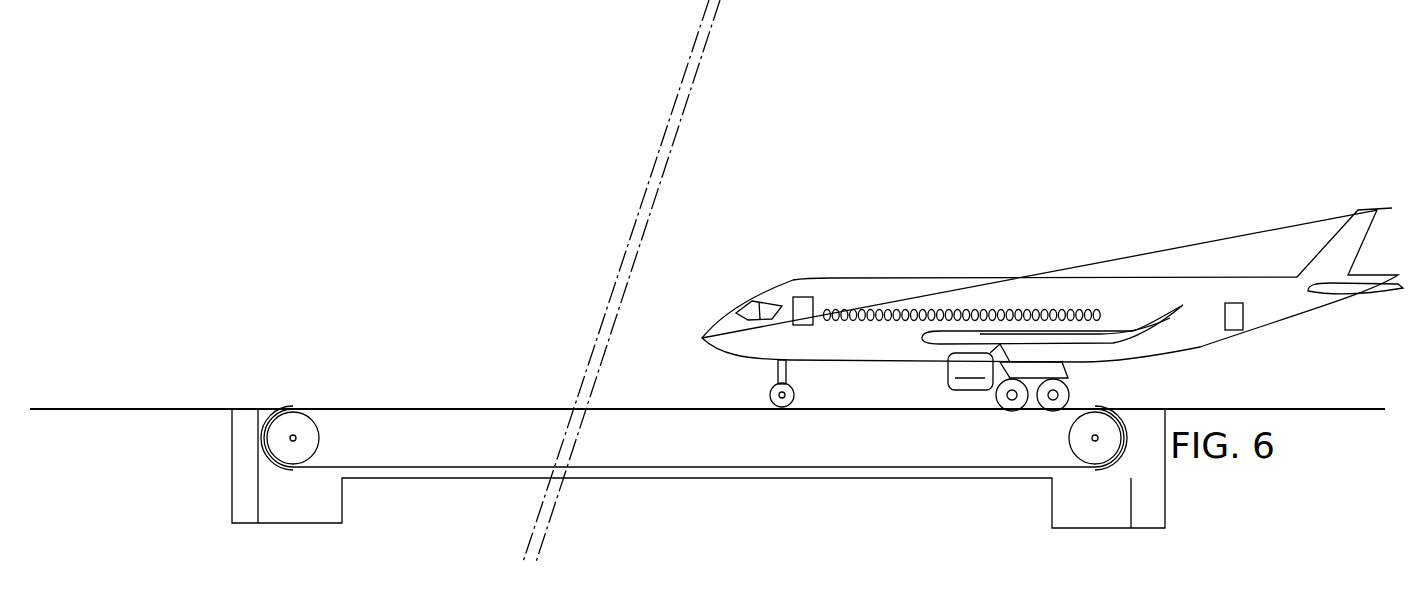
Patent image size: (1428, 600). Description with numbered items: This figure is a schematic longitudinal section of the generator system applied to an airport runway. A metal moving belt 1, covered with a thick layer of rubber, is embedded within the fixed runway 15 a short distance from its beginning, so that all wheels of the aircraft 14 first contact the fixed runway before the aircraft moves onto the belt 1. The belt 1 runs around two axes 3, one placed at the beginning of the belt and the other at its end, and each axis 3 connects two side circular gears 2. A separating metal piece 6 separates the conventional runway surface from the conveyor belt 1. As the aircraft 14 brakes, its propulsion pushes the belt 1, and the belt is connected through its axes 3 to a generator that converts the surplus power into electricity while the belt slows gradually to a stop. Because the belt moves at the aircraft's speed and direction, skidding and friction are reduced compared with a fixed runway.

The metal moving belt 1 is at (490, 404).
The circular gear 2 is at (333, 431).
The rotary axis 3 is at (293, 430).
The separating metal piece 6 is at (245, 432).
The aircraft 14 is at (757, 286).
The airport runway 15 is at (117, 405).